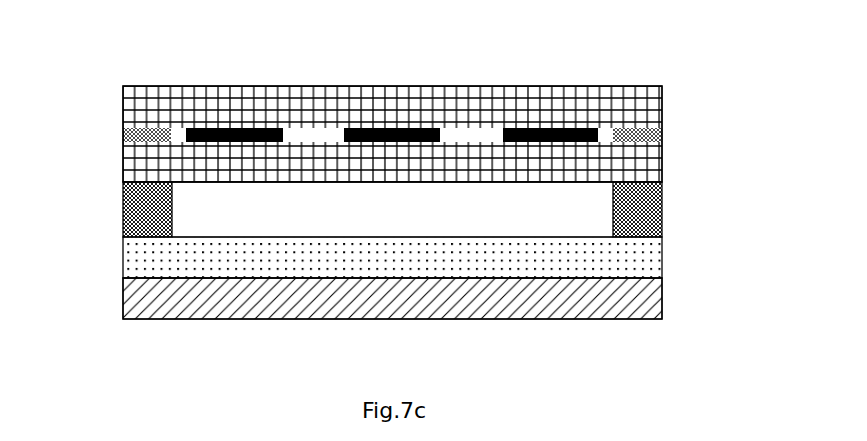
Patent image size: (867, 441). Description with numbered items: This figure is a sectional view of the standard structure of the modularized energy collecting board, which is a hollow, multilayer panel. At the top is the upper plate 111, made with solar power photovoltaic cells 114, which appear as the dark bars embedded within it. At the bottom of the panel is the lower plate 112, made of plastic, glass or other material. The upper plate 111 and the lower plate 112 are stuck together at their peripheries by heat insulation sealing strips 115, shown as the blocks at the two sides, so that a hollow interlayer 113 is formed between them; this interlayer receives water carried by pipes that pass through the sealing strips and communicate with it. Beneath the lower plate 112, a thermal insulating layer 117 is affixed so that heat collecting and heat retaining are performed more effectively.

The upper plate 111 is at (536, 81).
The lower plate 112 is at (640, 269).
The hollow interlayer 113 is at (244, 200).
The solar power photovoltaic cells 114 is at (385, 117).
The heat insulation sealing strips 115 is at (118, 207).
The thermal insulating layer 117 is at (640, 309).